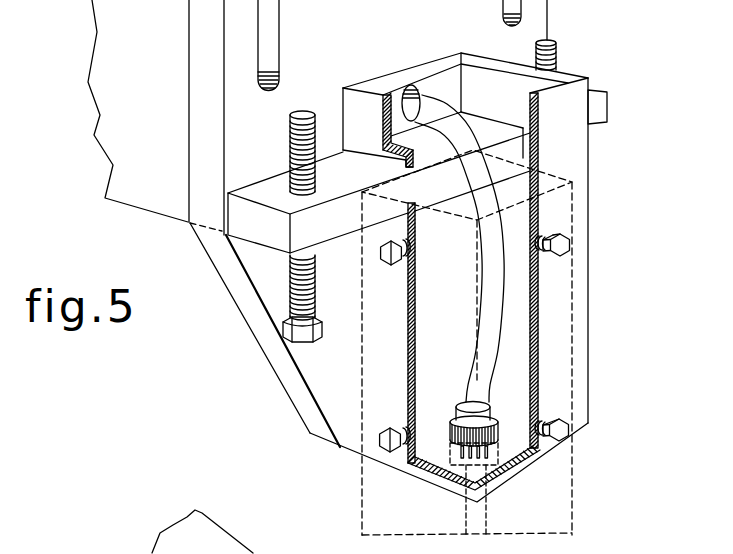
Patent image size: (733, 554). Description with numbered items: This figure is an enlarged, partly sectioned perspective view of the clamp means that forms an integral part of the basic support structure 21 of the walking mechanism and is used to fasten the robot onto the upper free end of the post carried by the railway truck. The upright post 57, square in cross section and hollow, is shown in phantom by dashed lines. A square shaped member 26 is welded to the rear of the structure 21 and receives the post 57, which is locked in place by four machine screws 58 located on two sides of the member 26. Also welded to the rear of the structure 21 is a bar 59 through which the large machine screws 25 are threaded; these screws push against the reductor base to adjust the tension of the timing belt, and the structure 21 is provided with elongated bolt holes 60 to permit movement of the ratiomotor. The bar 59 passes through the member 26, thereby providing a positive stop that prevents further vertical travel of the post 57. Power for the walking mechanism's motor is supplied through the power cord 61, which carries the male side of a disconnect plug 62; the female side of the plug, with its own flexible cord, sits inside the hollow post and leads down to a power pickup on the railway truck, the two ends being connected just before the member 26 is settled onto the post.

The basic support structure 21 is at (401, 33).
The large machine screws 25 is at (294, 148).
The square shaped member 26 is at (580, 163).
The upright post 57 is at (362, 482).
The machine screws 58 is at (563, 245).
The bar 59 is at (265, 233).
The elongated bolt holes 60 is at (266, 32).
The power cord 61 is at (433, 112).
The disconnect plug 62 is at (452, 430).